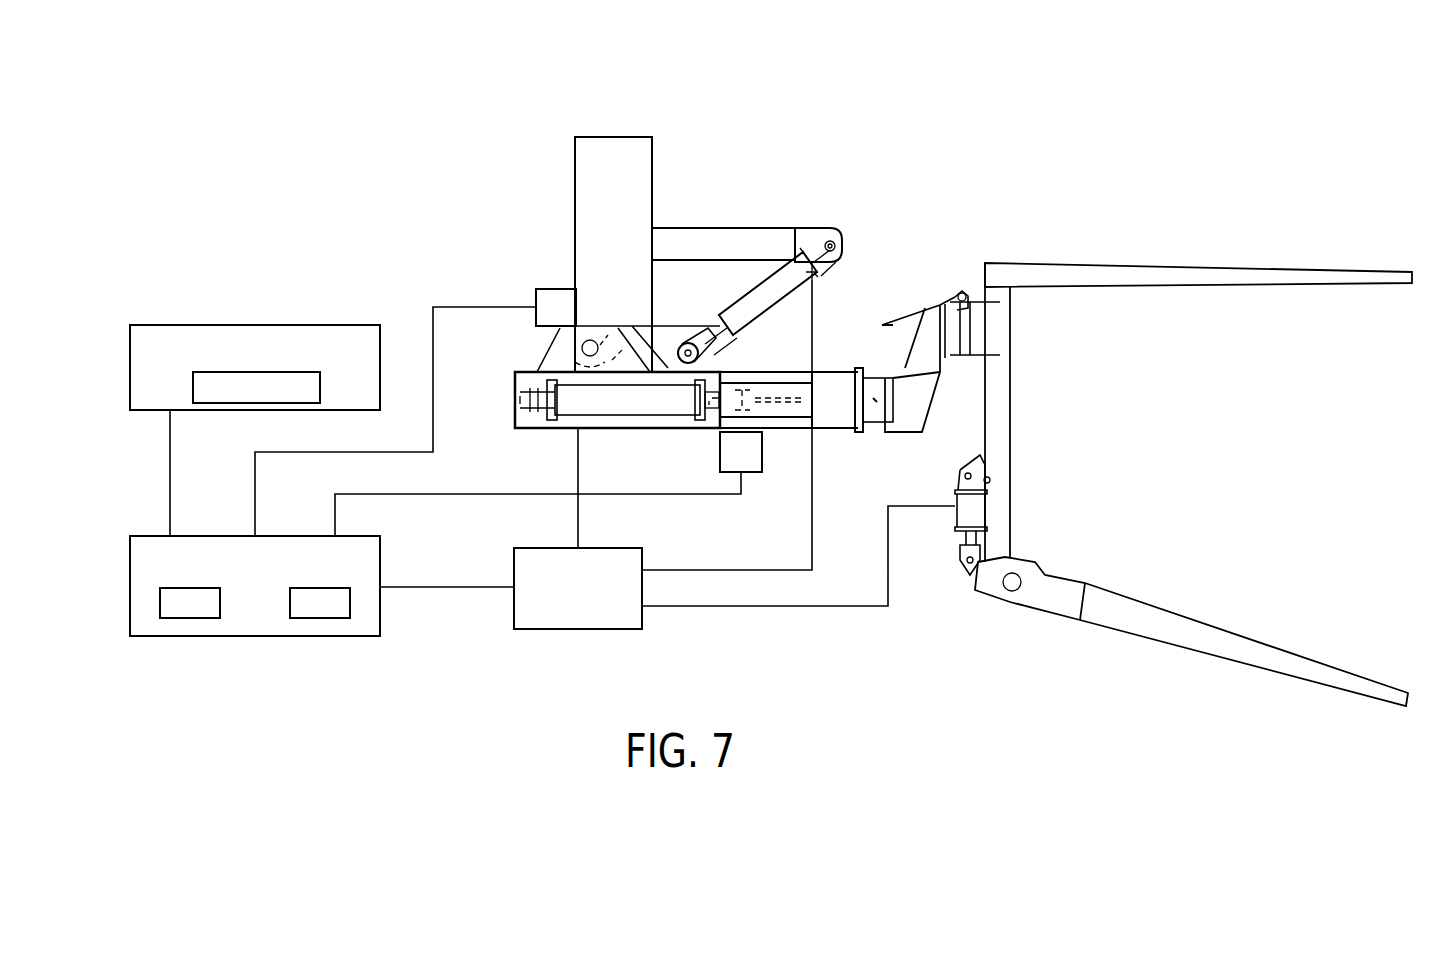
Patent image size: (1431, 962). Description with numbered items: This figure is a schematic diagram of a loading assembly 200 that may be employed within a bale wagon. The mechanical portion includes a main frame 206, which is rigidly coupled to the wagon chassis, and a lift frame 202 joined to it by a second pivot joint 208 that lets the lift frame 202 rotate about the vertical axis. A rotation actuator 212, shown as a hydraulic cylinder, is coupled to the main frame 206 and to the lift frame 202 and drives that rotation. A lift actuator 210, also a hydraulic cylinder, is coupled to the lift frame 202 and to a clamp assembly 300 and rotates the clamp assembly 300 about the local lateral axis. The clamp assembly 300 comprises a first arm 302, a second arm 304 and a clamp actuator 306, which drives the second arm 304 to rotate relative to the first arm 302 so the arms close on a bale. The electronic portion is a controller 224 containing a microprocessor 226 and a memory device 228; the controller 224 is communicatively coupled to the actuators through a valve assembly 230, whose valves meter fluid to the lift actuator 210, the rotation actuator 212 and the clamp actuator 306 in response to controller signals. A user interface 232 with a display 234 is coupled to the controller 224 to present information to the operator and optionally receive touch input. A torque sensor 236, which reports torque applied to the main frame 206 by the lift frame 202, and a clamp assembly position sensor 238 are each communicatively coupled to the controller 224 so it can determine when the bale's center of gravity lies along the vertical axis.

The loading assembly 200 is at (772, 132).
The lift frame 202 is at (832, 368).
The main frame 206 is at (575, 170).
The second pivot joint 208 is at (582, 348).
The lift actuator 210 is at (570, 430).
The rotation actuator 212 is at (768, 278).
The controller 224 is at (229, 593).
The microprocessor 226 is at (190, 618).
The memory device 228 is at (320, 618).
The valve assembly 230 is at (514, 610).
The user interface 232 is at (217, 352).
The display 234 is at (193, 390).
The torque sensor 236 is at (553, 289).
The clamp assembly position sensor 238 is at (720, 452).
The clamp assembly 300 is at (1165, 407).
The first arm 302 is at (1248, 267).
The second arm 304 is at (1240, 665).
The clamp actuator 306 is at (960, 530).